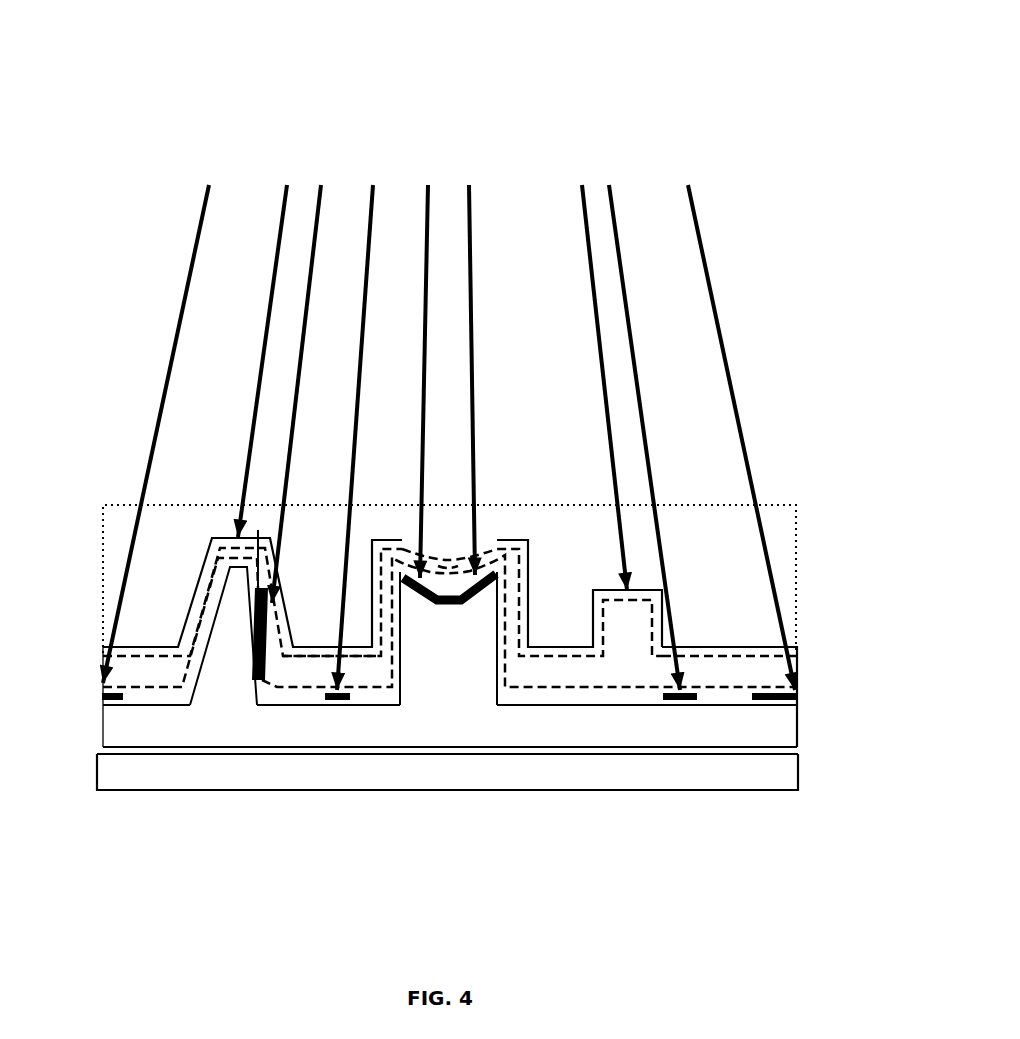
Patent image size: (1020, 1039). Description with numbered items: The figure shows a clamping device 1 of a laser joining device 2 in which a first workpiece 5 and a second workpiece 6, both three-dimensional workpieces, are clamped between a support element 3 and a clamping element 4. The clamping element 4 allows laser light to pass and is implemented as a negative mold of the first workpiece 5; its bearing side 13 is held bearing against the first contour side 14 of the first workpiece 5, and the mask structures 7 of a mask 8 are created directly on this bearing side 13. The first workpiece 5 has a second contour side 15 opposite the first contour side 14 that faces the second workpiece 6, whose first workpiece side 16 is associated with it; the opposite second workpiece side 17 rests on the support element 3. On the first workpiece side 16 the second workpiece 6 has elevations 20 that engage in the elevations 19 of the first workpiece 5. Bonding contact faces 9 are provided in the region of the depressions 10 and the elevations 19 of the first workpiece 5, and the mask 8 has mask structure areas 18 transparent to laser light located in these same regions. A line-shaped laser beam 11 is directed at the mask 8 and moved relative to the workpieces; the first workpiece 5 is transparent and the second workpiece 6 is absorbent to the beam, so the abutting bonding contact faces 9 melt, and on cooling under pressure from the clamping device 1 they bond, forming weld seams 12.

The clamping device 1 is at (805, 592).
The laser joining device 2 is at (164, 108).
The support element 3 is at (160, 770).
The clamping element 4 is at (118, 520).
The first workpiece 5 is at (140, 672).
The second workpiece 6 is at (122, 723).
The mask structures 7 is at (323, 638).
The mask 8 is at (258, 585).
The bonding contact faces 9 is at (450, 592).
The depressions 10 is at (557, 620).
The laser beam 11 is at (182, 245).
The weld seams 12 is at (250, 607).
The bearing side 13 is at (805, 658).
The first contour side 14 is at (733, 642).
The second contour side 15 is at (717, 693).
The first workpiece side 16 is at (547, 710).
The second workpiece side 17 is at (603, 756).
The mask structure areas 18 is at (353, 640).
The elevations 19 is at (630, 628).
The elevations 20 is at (220, 672).